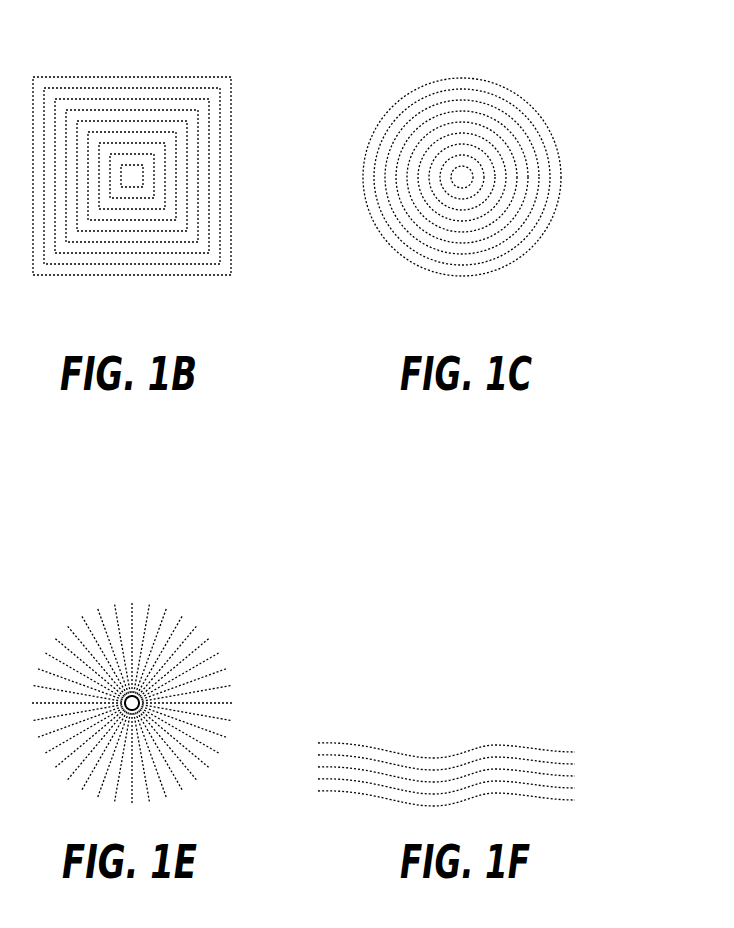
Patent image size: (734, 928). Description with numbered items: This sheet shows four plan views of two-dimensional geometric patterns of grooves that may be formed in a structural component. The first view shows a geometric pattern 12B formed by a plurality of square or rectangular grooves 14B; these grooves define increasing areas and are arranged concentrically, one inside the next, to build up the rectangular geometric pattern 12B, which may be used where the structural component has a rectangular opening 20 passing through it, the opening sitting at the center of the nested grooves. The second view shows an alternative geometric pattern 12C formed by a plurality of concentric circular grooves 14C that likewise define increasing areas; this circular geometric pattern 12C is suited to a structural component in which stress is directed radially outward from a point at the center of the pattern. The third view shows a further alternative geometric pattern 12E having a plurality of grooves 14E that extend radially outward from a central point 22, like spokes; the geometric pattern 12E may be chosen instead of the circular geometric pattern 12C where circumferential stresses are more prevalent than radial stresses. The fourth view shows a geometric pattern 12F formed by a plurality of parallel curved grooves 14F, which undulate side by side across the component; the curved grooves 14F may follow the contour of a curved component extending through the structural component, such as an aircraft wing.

In FIG. 1B, the two-dimensional geometric pattern 12B is at (159, 158).
In FIG. 1B, the square or rectangular grooves 14B is at (197, 158).
In FIG. 1B, the rectangular opening 20 is at (130, 187).
In FIG. 1C, the two-dimensional geometric pattern 12C is at (468, 152).
In FIG. 1C, the concentric circular grooves 14C is at (470, 85).
In FIG. 1C, the central point 22 is at (460, 178).
In FIG. 1E, the two-dimensional geometric pattern 12E is at (172, 669).
In FIG. 1E, the grooves 14E is at (190, 662).
In FIG. 1F, the geometric pattern 12F is at (446, 742).
In FIG. 1F, the parallel curved grooves 14F is at (480, 757).